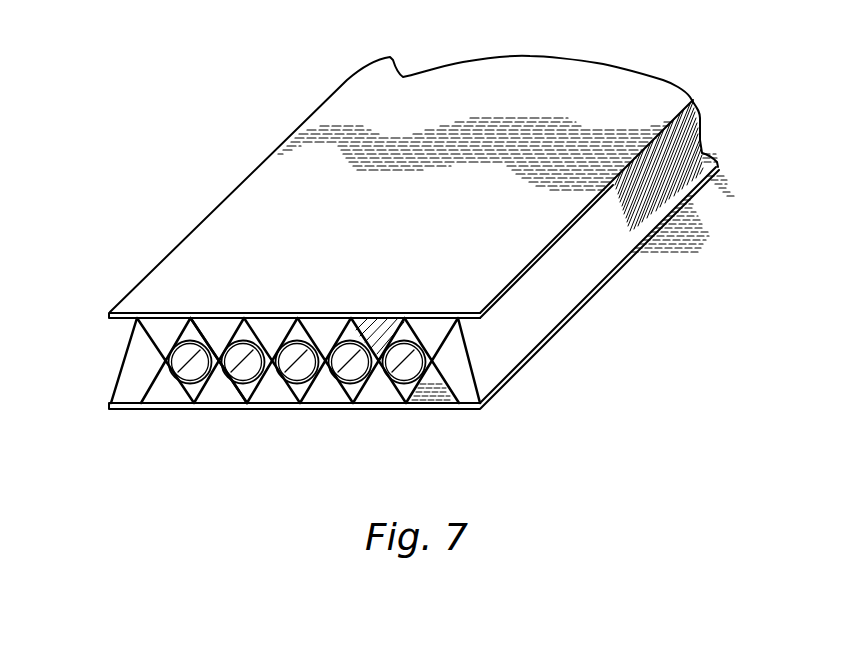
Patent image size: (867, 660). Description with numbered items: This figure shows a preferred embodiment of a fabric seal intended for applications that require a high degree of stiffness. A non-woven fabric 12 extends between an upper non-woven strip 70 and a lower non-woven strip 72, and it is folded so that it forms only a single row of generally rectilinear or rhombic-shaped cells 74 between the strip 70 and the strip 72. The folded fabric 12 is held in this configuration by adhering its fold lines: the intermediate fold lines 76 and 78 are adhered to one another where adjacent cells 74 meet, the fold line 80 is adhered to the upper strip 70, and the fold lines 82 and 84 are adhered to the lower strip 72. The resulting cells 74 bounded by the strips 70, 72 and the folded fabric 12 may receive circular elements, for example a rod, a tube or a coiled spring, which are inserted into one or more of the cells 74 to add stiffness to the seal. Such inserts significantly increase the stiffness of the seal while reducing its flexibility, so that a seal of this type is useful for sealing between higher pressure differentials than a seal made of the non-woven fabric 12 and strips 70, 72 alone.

The non-woven fabric 12 is at (408, 279).
The non-woven strip 70 is at (243, 215).
The non-woven strip 72 is at (153, 412).
The rectilinear cells 74 is at (383, 412).
The intermediate fold line 76 is at (203, 370).
The intermediate fold line 78 is at (238, 403).
The fold line 80 is at (290, 328).
The fold line 82 is at (260, 403).
The fold line 84 is at (284, 401).